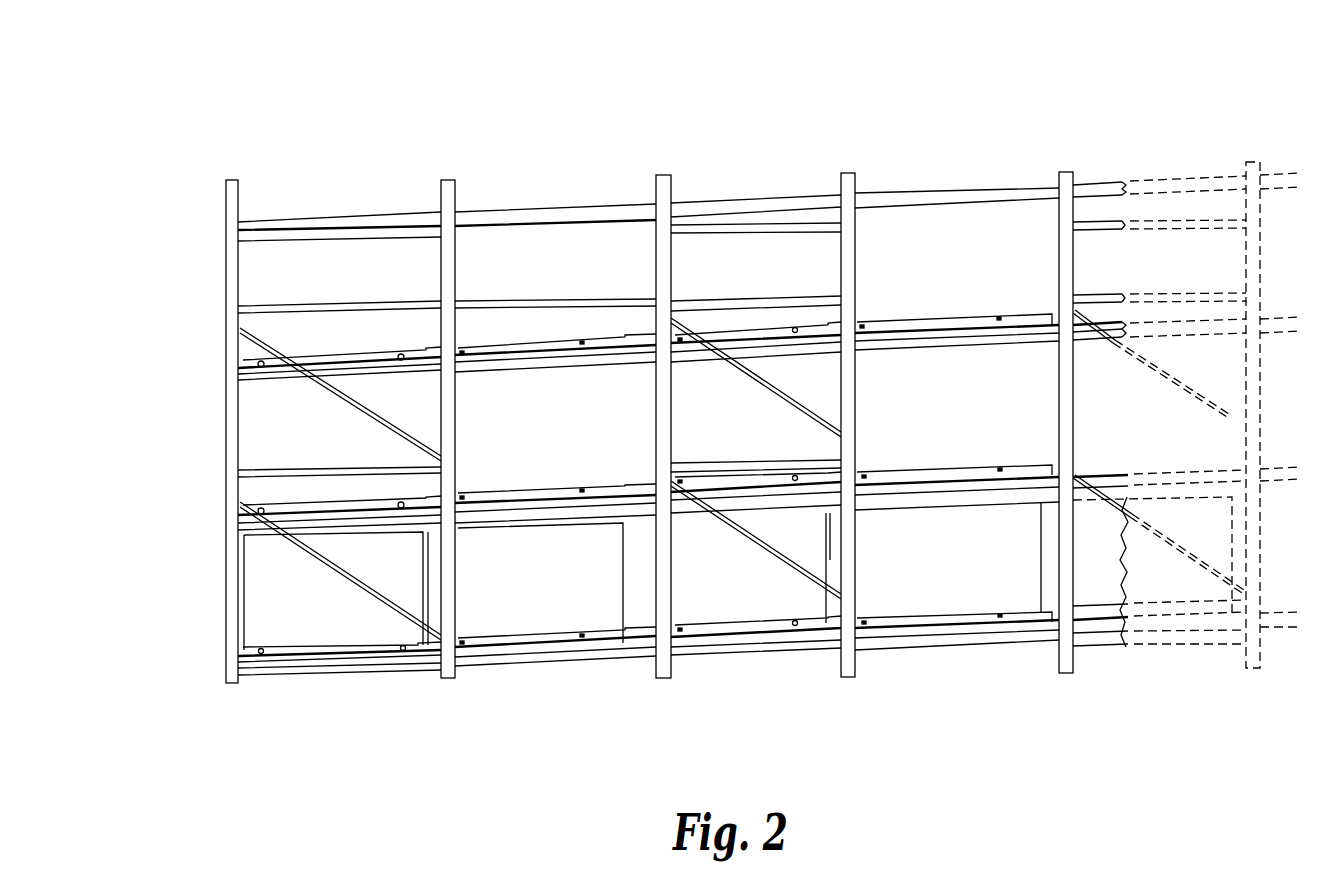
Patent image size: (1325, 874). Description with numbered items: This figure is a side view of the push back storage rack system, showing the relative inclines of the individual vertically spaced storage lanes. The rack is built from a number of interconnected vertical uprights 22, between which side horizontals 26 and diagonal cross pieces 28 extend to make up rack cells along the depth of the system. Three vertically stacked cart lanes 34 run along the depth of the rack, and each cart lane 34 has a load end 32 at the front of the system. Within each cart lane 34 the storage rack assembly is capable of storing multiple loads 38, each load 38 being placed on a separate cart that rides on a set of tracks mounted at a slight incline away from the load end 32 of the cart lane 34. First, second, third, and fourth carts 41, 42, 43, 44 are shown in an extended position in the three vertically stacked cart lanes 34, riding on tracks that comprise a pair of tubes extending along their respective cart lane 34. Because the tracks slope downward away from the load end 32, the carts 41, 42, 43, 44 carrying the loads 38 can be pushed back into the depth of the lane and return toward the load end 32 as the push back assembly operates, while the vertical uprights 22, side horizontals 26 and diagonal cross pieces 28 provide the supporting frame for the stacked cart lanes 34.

The vertical upright 22 is at (1253, 163).
The side horizontal 26 is at (280, 653).
The diagonal cross piece 28 is at (320, 553).
The load end 32 is at (240, 344).
The cart lane 34 is at (780, 255).
The load 38 is at (908, 600).
The first cart 41 is at (360, 359).
The second cart 42 is at (517, 350).
The third cart 43 is at (810, 335).
The fourth cart 44 is at (973, 472).